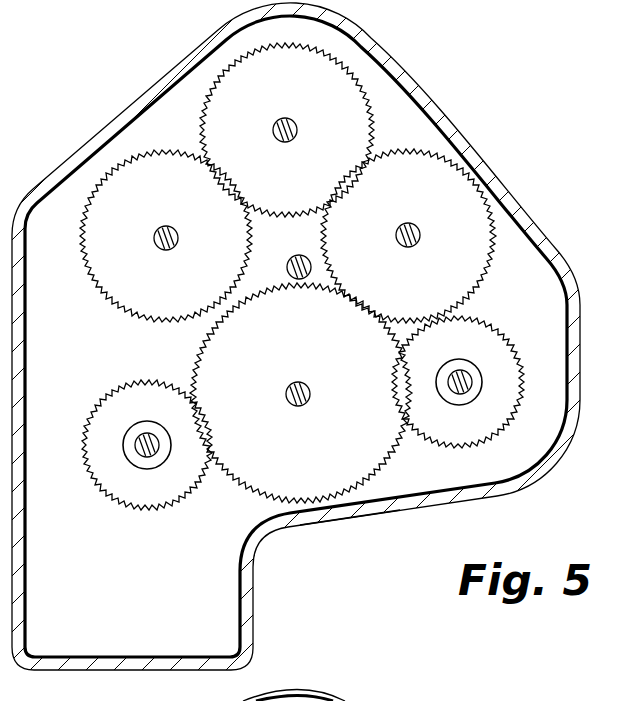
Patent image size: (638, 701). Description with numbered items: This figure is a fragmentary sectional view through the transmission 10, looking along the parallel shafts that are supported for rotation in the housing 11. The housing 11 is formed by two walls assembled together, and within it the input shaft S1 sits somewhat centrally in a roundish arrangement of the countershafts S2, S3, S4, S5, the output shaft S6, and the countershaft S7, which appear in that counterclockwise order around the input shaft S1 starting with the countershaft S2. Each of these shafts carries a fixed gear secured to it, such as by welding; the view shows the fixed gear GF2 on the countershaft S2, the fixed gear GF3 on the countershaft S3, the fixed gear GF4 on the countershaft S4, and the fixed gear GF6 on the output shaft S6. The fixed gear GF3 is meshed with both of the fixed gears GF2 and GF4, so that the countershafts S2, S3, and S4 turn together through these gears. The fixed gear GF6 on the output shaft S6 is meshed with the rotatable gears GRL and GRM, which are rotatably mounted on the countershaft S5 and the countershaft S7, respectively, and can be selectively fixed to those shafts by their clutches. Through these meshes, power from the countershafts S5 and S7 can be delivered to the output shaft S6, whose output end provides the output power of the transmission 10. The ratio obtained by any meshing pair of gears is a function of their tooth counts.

The transmission 10 is at (532, 170).
The housing 11 is at (346, 522).
The fixed gear GF2 is at (424, 208).
The fixed gear GF3 is at (301, 95).
The fixed gear GF4 is at (183, 208).
The fixed gear GF6 is at (304, 352).
The rotatable gear GRL is at (91, 470).
The rotatable gear GRM is at (500, 334).
The input shaft S1 is at (300, 256).
The countershaft S2 is at (408, 247).
The countershaft S3 is at (284, 143).
The countershaft S4 is at (168, 250).
The countershaft S5 is at (147, 457).
The output shaft S6 is at (298, 406).
The countershaft S7 is at (455, 393).